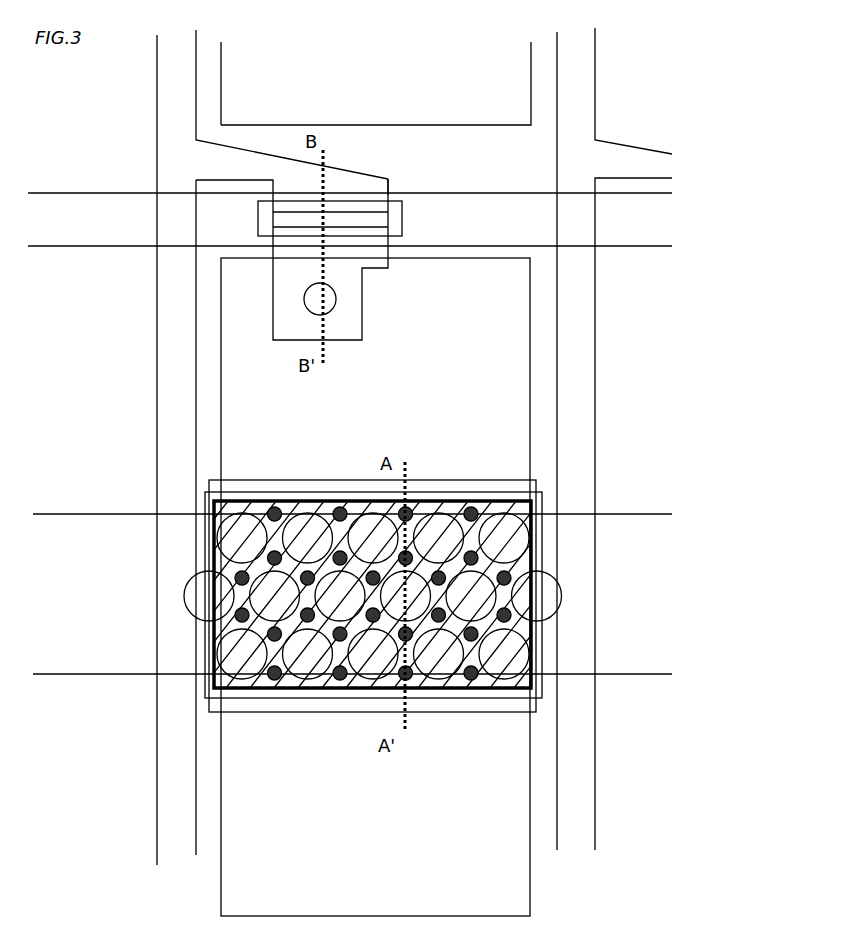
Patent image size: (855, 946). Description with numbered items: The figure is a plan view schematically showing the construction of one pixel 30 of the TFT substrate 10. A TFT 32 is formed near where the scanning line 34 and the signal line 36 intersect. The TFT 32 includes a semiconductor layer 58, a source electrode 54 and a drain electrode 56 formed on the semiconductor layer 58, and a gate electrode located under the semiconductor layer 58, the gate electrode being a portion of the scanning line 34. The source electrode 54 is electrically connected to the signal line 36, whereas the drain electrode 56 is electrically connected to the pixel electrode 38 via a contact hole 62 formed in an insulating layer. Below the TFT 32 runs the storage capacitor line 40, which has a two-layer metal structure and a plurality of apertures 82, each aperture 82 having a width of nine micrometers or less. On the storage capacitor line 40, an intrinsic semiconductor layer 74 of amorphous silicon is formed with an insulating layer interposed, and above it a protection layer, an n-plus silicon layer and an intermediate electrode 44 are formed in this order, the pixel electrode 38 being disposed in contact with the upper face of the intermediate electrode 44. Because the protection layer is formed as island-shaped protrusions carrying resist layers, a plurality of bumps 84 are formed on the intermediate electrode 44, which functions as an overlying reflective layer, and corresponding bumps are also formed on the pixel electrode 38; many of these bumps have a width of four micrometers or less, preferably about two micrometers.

The TFT substrate 10 is at (651, 87).
The pixel 30 is at (547, 340).
The TFT 32 is at (349, 163).
The scanning line 34 is at (97, 215).
The signal line 36 is at (165, 723).
The pixel electrode 38 is at (520, 882).
The storage capacitor line 40 is at (83, 535).
The intermediate electrode 44 is at (467, 688).
The source electrode 54 is at (386, 171).
The drain electrode 56 is at (266, 325).
The semiconductor layer 58 is at (409, 221).
The contact hole 62 is at (343, 298).
The intrinsic semiconductor layer 74 is at (255, 698).
The aperture 82 is at (443, 523).
The bump 84 is at (338, 510).